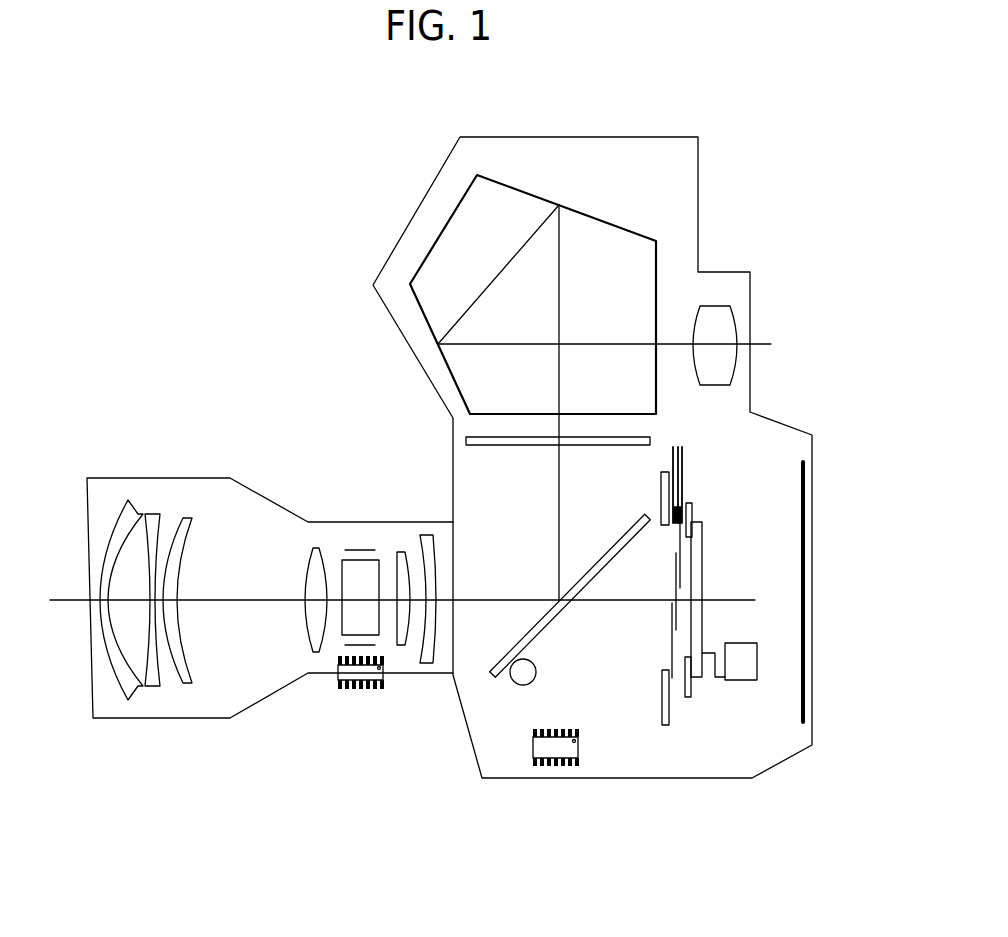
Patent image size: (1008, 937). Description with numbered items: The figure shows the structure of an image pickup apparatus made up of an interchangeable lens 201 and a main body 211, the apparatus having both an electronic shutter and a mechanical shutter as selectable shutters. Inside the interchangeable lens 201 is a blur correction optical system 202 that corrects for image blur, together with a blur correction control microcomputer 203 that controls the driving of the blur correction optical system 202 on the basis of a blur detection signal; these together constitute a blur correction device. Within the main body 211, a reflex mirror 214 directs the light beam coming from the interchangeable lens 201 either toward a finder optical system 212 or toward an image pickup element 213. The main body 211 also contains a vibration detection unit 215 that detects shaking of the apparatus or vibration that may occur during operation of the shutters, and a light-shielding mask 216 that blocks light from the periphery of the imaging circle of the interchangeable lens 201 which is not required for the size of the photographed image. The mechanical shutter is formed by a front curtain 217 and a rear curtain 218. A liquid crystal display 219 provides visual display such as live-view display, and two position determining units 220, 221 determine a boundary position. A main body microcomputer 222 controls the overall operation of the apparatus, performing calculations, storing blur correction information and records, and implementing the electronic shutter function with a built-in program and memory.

The interchangeable lens 201 is at (442, 468).
The blur correction optical system 202 is at (368, 575).
The blur correction control microcomputer 203 is at (383, 685).
The main body 211 is at (620, 780).
The finder optical system 212 is at (640, 236).
The image pickup element 213 is at (703, 553).
The reflex mirror 214 is at (622, 533).
The vibration detection unit 215 is at (758, 662).
The light-shielding mask 216 is at (665, 683).
The front curtain 217 is at (672, 620).
The rear curtain 218 is at (683, 465).
The liquid crystal display 219 is at (805, 643).
The position determining unit 220 is at (687, 694).
The position determining unit 221 is at (692, 513).
The main body microcomputer 222 is at (533, 747).